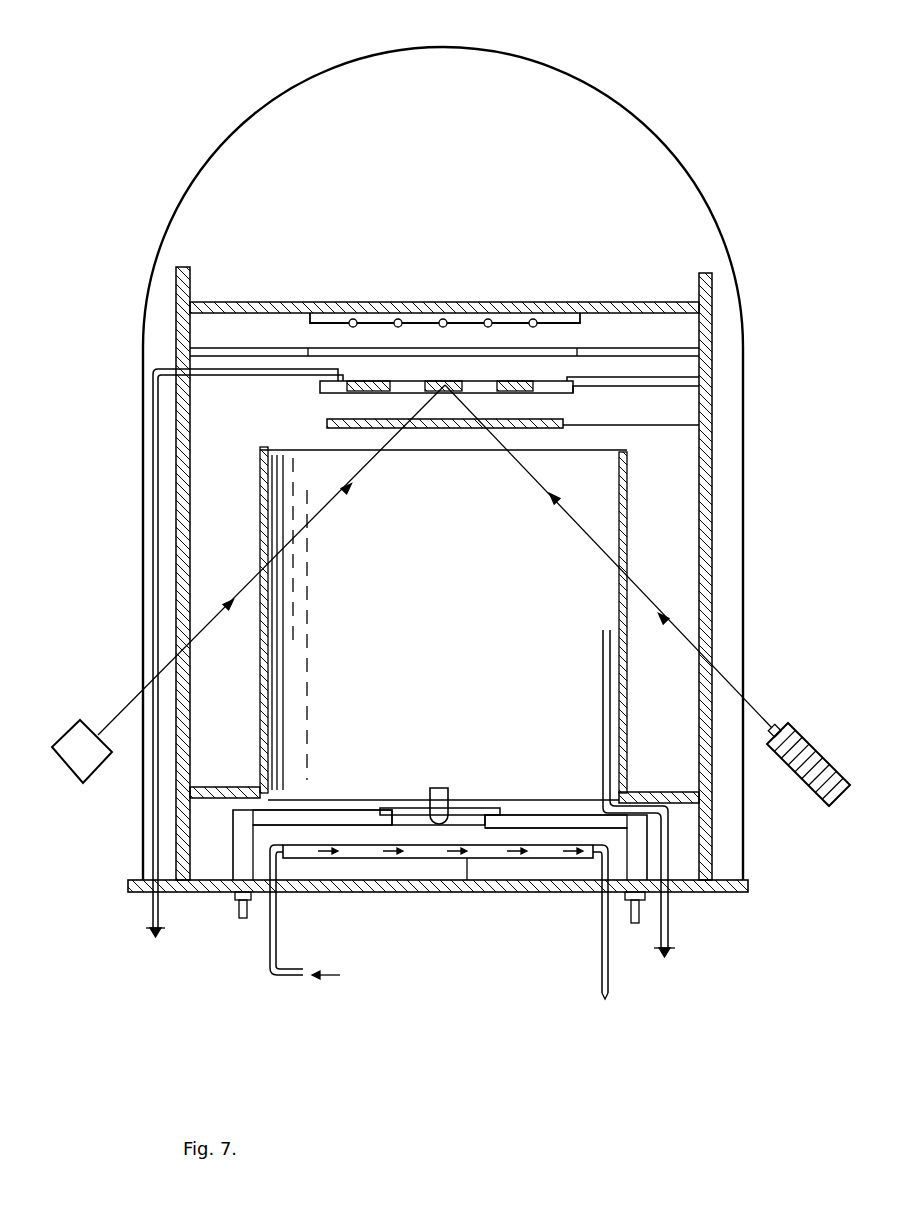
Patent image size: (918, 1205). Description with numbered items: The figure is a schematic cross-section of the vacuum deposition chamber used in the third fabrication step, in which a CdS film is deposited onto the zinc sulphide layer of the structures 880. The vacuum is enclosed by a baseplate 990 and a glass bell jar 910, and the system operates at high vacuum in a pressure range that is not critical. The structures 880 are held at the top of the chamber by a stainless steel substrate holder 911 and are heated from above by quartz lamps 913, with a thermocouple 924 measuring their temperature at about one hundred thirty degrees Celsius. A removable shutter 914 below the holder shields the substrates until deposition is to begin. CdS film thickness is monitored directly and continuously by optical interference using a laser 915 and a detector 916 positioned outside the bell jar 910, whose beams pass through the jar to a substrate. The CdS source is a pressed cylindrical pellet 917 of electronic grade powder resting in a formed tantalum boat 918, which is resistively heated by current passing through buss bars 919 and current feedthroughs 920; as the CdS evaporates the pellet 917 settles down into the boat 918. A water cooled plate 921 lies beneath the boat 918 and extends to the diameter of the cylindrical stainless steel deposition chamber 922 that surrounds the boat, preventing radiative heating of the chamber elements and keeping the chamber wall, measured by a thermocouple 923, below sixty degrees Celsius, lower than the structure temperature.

The glass bell jar 910 is at (754, 502).
The baseplate 990 is at (700, 893).
The quartz lamps 913 is at (540, 326).
The thermocouple 924 is at (270, 371).
The stainless steel substrate holder 911 is at (408, 392).
The structures 880 is at (440, 382).
The removable shutter 914 is at (555, 430).
The cylindrical stainless steel deposition chamber 922 is at (268, 693).
The thermocouple 923 is at (606, 630).
The detector 916 is at (78, 728).
The laser 915 is at (788, 723).
The current feedthroughs 920 is at (233, 846).
The buss bars 919 is at (337, 810).
The formed tantalum boat 918 is at (480, 808).
The pressed cylindrical pellet 917 is at (441, 790).
The water cooled plate 921 is at (540, 855).